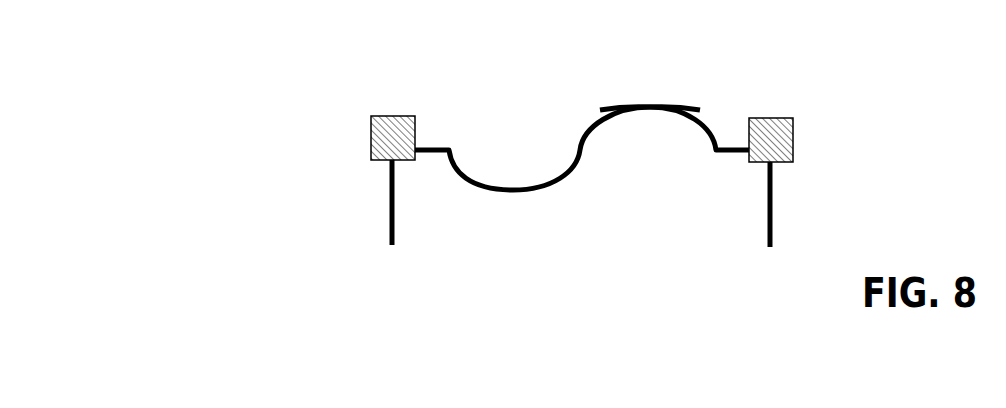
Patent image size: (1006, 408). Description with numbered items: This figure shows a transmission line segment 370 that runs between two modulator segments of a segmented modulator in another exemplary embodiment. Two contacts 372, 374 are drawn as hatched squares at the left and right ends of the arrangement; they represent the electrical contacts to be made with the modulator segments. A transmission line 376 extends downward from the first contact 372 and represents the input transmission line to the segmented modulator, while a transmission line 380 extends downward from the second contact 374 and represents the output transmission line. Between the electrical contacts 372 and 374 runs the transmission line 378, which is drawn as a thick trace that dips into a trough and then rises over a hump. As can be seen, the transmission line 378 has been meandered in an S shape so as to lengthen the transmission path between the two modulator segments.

The electrode structure 370 is at (602, 308).
The contact 372 is at (392, 116).
The contact 374 is at (769, 118).
The transmission line 376 is at (395, 212).
The transmission line 378 is at (630, 105).
The transmission line 380 is at (767, 197).